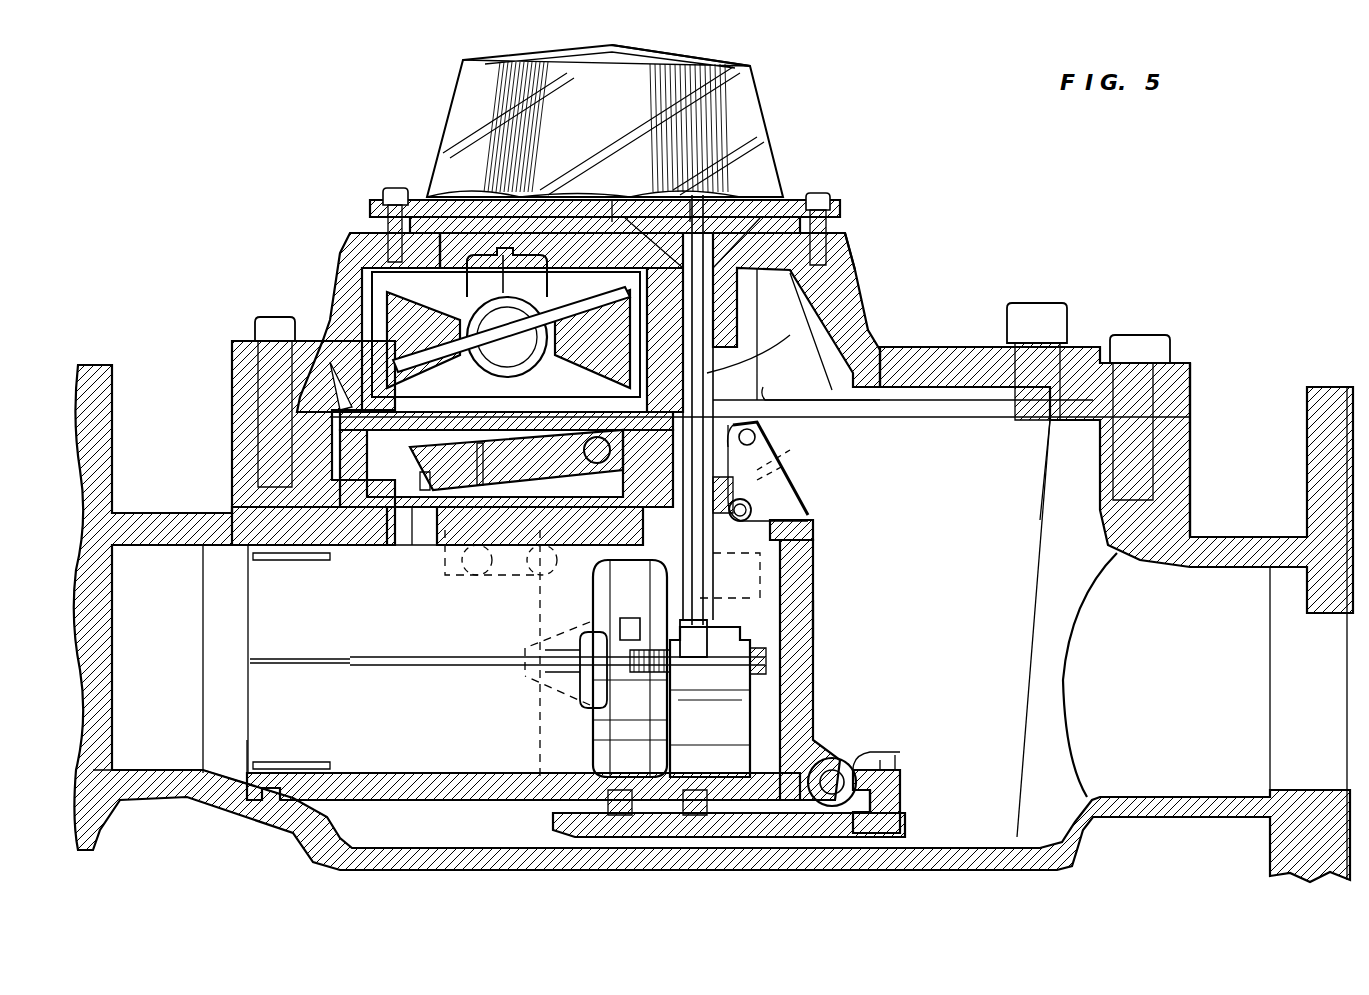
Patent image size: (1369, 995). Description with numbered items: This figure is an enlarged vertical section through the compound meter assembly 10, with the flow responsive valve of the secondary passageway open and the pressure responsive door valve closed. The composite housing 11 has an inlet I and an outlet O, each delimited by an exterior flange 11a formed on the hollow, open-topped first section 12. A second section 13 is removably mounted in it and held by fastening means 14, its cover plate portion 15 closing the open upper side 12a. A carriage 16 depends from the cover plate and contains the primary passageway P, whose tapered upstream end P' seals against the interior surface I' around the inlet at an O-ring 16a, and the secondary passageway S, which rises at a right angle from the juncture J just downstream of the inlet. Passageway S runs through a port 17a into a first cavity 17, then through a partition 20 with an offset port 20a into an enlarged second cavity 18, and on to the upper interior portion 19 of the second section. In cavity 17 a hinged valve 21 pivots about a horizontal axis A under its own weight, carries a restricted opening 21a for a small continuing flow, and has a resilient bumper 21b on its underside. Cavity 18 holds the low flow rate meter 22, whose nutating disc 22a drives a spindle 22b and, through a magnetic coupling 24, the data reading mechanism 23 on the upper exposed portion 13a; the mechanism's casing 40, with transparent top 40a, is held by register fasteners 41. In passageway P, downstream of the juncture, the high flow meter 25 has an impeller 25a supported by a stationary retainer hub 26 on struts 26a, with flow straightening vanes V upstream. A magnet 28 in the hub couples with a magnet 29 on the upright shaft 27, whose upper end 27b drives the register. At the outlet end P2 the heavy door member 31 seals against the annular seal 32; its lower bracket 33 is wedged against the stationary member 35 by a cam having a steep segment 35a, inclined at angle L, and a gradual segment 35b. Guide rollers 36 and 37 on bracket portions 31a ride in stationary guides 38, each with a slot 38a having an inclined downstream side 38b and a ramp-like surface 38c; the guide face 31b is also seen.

The assembly 10 is at (918, 245).
The composite housing 11 is at (1092, 328).
The exterior flange 11a is at (96, 372).
The first section 12 is at (142, 503).
The open upper side 12a is at (1088, 450).
The second section 13 is at (330, 248).
The upper exposed portion 13a is at (832, 242).
The fastening means 14 is at (270, 335).
The cover plate portion 15 is at (1182, 392).
The carriage 16 is at (330, 446).
The O-ring 16a is at (278, 802).
The first cavity 17 is at (573, 493).
The port 17a is at (396, 550).
The second cavity 18 is at (562, 415).
The upper interior portion 19 is at (742, 355).
The partition 20 is at (400, 420).
The port 20a is at (505, 427).
The hinged valve 21 is at (537, 465).
The restricted opening 21a is at (478, 452).
The resilient bumper 21b is at (426, 533).
The low flow rate meter 22 is at (590, 357).
The disc 22a is at (437, 329).
The drive spindle 22b is at (474, 281).
The data reading mechanism 23 is at (498, 188).
The magnetic coupling 24 is at (462, 204).
The meter 25 is at (632, 762).
The turbine wheel or impeller 25a is at (650, 756).
The stationary retainer hub 26 is at (722, 712).
The struts 26a is at (728, 756).
The upright elongated shaft 27 is at (703, 377).
The upper end of shaft 27b is at (762, 196).
The multi-pole annular magnet 28 is at (628, 625).
The annular multiple pole magnet 29 is at (705, 632).
The door member 31 is at (813, 580).
The bracket portions 31a is at (800, 520).
The partition face 31b is at (790, 622).
The annular seal 32 is at (745, 822).
The bracket 33 is at (818, 760).
The stationary member 35 is at (910, 823).
The steeply inclined segment 35a is at (904, 800).
The gradual inclined segment 35b is at (900, 766).
The guide rollers 36 is at (760, 509).
The guide rollers 37 is at (762, 405).
The stationary guides 38 is at (790, 458).
The slot 38a is at (750, 487).
The downstream side 38b is at (792, 452).
The ramp-like surface 38c is at (728, 425).
The casing 40 is at (762, 124).
The cap top 40a is at (645, 68).
The register fasteners 41 is at (822, 215).
The horizontal axis A is at (601, 481).
The secondary passageway S is at (392, 501).
The juncture J is at (380, 537).
The flow straightening vanes V is at (262, 682).
The inlet I is at (102, 606).
The outlet O is at (1318, 649).
The primary passageway P is at (493, 789).
The outlet end of primary passageway P2 is at (762, 730).
The angle L is at (882, 762).
The interior surface I' is at (148, 800).
The upstream end of primary passageway P' is at (245, 810).